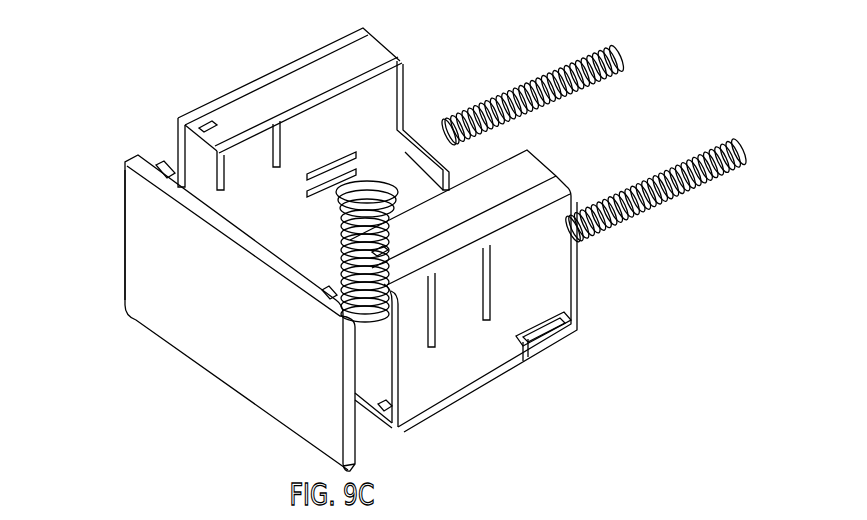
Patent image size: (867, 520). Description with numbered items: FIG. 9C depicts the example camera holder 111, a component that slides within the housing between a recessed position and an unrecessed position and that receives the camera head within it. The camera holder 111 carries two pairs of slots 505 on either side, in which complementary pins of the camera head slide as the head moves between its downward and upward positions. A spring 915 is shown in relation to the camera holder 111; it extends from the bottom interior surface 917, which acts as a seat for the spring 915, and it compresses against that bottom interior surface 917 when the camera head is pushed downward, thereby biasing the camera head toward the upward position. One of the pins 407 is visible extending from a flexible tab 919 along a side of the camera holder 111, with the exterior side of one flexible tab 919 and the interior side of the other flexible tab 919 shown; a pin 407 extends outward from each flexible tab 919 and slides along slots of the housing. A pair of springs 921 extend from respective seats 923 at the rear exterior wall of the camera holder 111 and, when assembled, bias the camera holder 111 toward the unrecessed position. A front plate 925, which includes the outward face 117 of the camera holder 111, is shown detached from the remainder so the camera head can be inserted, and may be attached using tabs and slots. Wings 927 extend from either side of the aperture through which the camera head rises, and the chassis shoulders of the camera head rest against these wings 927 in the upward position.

The camera holder 111 is at (381, 52).
The wings 927 is at (273, 102).
The bottom interior surface 917 is at (358, 388).
The outward face 117 is at (223, 312).
The front plate 925 is at (136, 233).
The slots 505 is at (224, 189).
The flexible tabs 919 is at (330, 168).
The pins 407 is at (567, 328).
The spring 915 is at (350, 232).
The springs 921 is at (612, 86).
The seats 923 is at (431, 128).